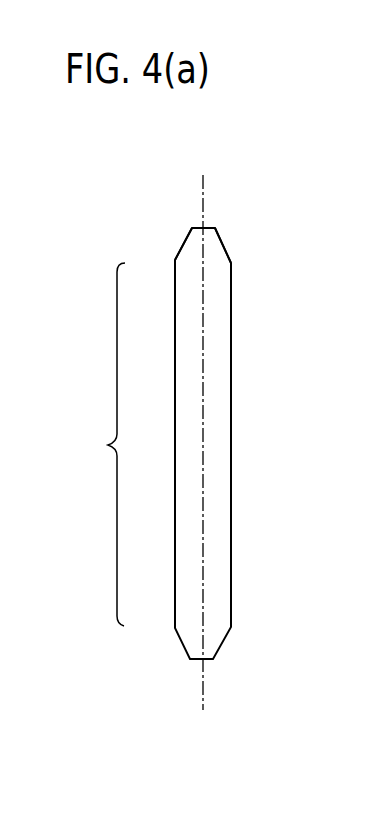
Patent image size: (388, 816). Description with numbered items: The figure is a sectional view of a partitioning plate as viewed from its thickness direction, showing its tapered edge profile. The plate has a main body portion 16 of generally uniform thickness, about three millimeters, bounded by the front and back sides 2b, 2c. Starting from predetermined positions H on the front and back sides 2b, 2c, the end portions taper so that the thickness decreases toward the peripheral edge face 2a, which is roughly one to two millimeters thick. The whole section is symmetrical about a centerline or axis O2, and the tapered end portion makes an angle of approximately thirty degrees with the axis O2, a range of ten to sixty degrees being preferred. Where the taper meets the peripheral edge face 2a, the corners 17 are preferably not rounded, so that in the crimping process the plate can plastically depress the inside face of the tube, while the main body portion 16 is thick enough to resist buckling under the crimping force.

The main body portion 16 is at (146, 443).
The corners 17 is at (217, 227).
The peripheral edge face 2a is at (203, 660).
The front side 2b is at (175, 563).
The back side 2c is at (232, 563).
The predetermined positions H is at (233, 262).
The axis O2 is at (204, 188).